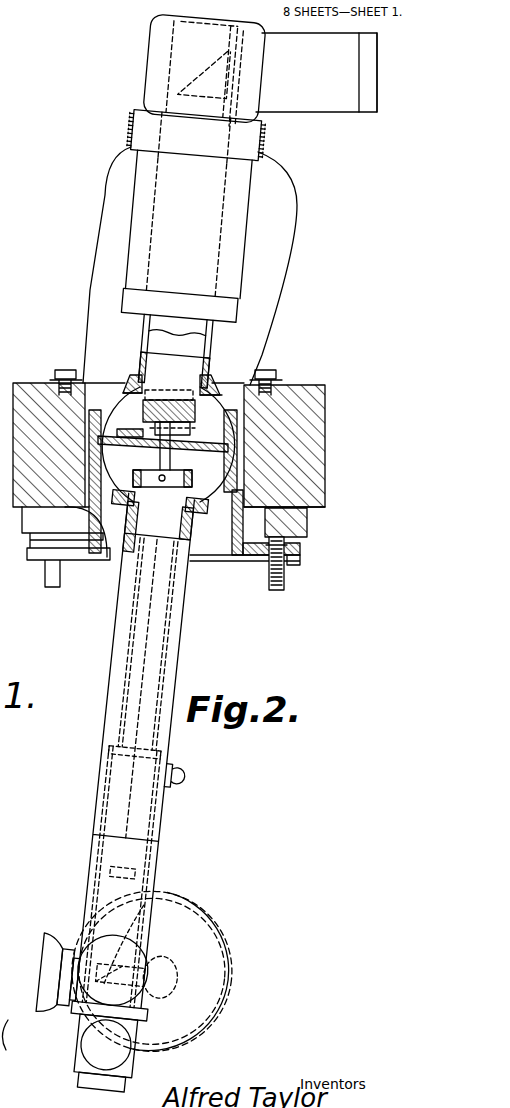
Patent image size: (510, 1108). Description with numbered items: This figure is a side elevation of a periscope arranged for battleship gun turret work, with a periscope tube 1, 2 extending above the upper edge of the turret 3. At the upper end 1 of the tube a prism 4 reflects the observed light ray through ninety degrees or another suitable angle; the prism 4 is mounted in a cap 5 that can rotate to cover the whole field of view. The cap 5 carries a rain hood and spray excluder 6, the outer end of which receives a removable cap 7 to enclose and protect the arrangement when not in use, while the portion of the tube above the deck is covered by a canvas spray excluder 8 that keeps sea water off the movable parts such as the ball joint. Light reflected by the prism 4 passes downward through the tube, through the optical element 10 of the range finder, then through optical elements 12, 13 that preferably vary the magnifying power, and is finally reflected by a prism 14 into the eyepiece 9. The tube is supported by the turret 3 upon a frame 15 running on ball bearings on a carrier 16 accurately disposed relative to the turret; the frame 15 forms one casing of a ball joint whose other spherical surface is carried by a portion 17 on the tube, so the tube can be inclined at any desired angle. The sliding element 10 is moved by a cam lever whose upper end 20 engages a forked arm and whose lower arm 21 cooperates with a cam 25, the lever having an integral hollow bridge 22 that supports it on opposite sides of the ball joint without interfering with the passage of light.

The upper end of periscope tube 1 is at (210, 348).
The periscope tube 2 is at (184, 660).
The turret 3 is at (298, 405).
The prism 4 is at (208, 77).
The cap 5 is at (254, 38).
The rain hood and spray excluder 6 is at (316, 72).
The removable cap 7 is at (366, 105).
The spray excluder 8 is at (292, 263).
The eyepiece 9 is at (45, 963).
The optical element of range finder 10 is at (155, 412).
The optical element 12 is at (123, 757).
The optical element 13 is at (110, 868).
The prism 14 is at (78, 995).
The frame 15 is at (237, 545).
The carrier 16 is at (300, 552).
The ball joint portion 17 is at (103, 457).
The upper end of cam lever 20 is at (177, 457).
The lower arm of cam lever 21 is at (155, 633).
The hollow bridge 22 is at (192, 486).
The cam 25 is at (158, 993).